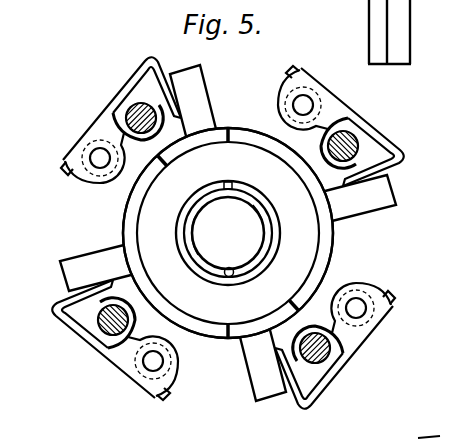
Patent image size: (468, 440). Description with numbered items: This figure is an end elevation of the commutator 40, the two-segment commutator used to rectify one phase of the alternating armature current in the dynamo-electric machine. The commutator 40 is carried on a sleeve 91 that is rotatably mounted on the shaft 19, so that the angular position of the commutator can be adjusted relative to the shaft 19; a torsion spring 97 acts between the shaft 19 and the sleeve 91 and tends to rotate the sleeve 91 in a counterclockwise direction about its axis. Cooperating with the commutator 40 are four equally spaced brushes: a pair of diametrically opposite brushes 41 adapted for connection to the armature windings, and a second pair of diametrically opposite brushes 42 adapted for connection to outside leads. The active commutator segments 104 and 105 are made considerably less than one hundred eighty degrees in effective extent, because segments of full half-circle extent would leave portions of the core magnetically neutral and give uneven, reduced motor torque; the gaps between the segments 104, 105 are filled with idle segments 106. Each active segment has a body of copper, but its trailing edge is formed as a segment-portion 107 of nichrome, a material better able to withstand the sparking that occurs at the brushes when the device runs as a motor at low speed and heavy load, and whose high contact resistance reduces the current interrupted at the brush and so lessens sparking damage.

The shaft 19 is at (228, 233).
The commutator 40 is at (308, 230).
The brushes 41 is at (200, 78).
The brushes 42 is at (397, 195).
The sleeve 91 is at (198, 275).
The torsion spring 97 is at (191, 246).
The commutator segment 104 is at (125, 228).
The commutator segment 105 is at (332, 253).
The idle segments 106 is at (222, 128).
The trailing edge segment-portion 107 is at (165, 168).